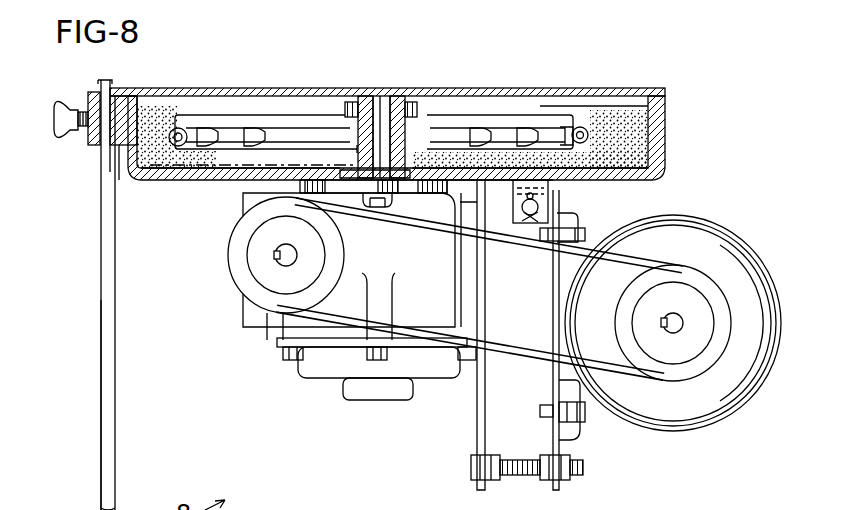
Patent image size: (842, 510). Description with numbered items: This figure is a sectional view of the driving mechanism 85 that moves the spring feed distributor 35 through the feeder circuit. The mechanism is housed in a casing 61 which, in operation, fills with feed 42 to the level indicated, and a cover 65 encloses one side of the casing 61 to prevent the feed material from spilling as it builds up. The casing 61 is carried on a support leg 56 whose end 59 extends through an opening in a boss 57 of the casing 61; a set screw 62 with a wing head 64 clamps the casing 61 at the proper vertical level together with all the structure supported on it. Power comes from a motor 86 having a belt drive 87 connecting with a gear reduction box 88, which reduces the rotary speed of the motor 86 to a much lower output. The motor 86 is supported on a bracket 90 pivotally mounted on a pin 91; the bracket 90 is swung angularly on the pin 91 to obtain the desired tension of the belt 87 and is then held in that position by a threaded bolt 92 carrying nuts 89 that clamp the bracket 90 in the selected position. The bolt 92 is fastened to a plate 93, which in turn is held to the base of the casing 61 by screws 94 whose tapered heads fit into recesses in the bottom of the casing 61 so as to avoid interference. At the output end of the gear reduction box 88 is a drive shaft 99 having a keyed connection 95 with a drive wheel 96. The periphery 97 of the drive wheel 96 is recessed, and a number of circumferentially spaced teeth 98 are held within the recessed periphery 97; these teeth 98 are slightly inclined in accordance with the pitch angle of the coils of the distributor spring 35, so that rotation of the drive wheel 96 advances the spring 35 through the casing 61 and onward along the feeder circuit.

The spring feed distributor 35 is at (172, 128).
The feed 42 is at (625, 118).
The support leg 56 is at (103, 300).
The boss 57 is at (118, 175).
The end of support leg 59 is at (100, 86).
The casing 61 is at (176, 181).
The set screw 62 is at (95, 130).
The wing head 64 is at (62, 118).
The cover 65 is at (440, 92).
The driving mechanism 85 is at (294, 396).
The motor 86 is at (724, 400).
The belt drive 87 is at (443, 340).
The gear reduction box 88 is at (277, 333).
The nuts 89 is at (566, 481).
The bracket 90 is at (561, 440).
The pin 91 is at (539, 205).
The threaded bolt 92 is at (522, 476).
The plate 93 is at (483, 438).
The screws 94 is at (545, 175).
The keyed connection 95 is at (356, 100).
The drive wheel 96 is at (278, 130).
The periphery of drive wheel 97 is at (228, 118).
The teeth 98 is at (205, 127).
The drive shaft 99 is at (378, 100).